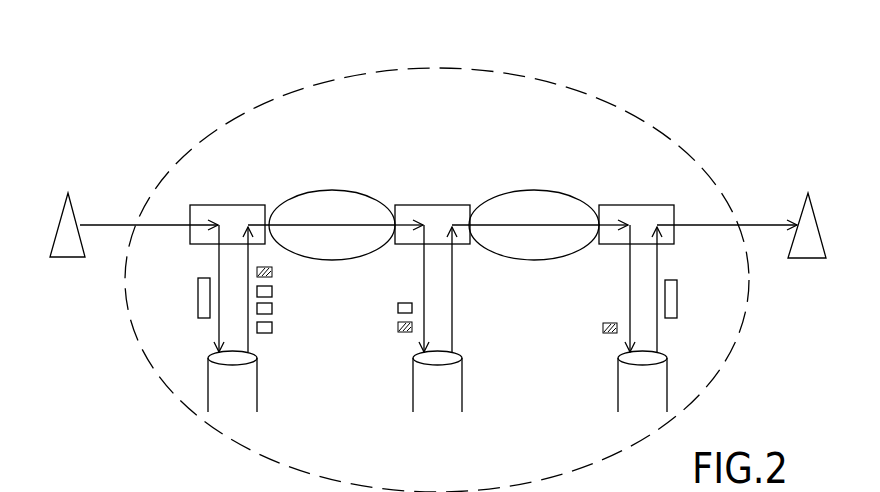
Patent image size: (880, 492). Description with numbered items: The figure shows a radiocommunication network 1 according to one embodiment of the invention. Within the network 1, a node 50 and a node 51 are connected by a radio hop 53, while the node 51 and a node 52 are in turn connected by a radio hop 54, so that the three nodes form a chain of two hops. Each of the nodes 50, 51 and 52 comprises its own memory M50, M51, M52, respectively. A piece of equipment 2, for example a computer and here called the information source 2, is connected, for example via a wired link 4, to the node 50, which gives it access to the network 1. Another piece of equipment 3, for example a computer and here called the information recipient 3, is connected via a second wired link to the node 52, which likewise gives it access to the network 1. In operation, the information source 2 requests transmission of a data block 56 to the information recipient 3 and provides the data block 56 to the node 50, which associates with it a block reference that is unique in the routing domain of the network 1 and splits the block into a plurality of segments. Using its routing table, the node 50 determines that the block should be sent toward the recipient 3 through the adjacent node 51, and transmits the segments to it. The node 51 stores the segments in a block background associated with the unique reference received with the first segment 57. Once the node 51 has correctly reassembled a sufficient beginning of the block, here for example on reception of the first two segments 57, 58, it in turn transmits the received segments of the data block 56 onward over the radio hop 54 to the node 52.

The network 1 is at (303, 88).
The information source 2 is at (68, 215).
The information recipient 3 is at (815, 226).
The wired link 4 is at (113, 224).
The node 50 is at (238, 217).
The node 51 is at (432, 205).
The node 52 is at (640, 205).
The radio hop 53 is at (336, 190).
The radio hop 54 is at (535, 190).
The data block 56 is at (198, 298).
The first segment 57 is at (404, 335).
The second segment 58 is at (398, 308).
The memory M50 is at (250, 392).
The memory M51 is at (453, 392).
The memory M52 is at (630, 392).